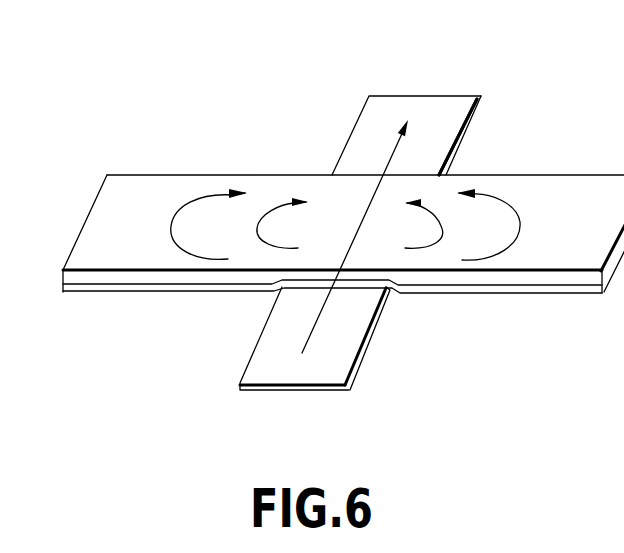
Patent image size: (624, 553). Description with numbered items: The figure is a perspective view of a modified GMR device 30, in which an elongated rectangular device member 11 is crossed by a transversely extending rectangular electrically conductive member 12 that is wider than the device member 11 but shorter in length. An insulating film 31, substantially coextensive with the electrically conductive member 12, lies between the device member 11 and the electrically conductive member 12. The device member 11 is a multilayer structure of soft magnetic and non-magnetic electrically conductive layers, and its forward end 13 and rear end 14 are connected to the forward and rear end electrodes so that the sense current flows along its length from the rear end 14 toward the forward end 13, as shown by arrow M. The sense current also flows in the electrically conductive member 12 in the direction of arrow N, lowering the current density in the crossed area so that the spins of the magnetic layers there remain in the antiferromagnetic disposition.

The GMR device 30 is at (268, 165).
The electrically conductive member 12 is at (115, 210).
The insulating film 31 is at (111, 293).
The device member 11 is at (348, 127).
The forward end 13 is at (447, 116).
The rear end 14 is at (337, 365).
The arrow M is at (320, 315).
The arrow N is at (197, 257).